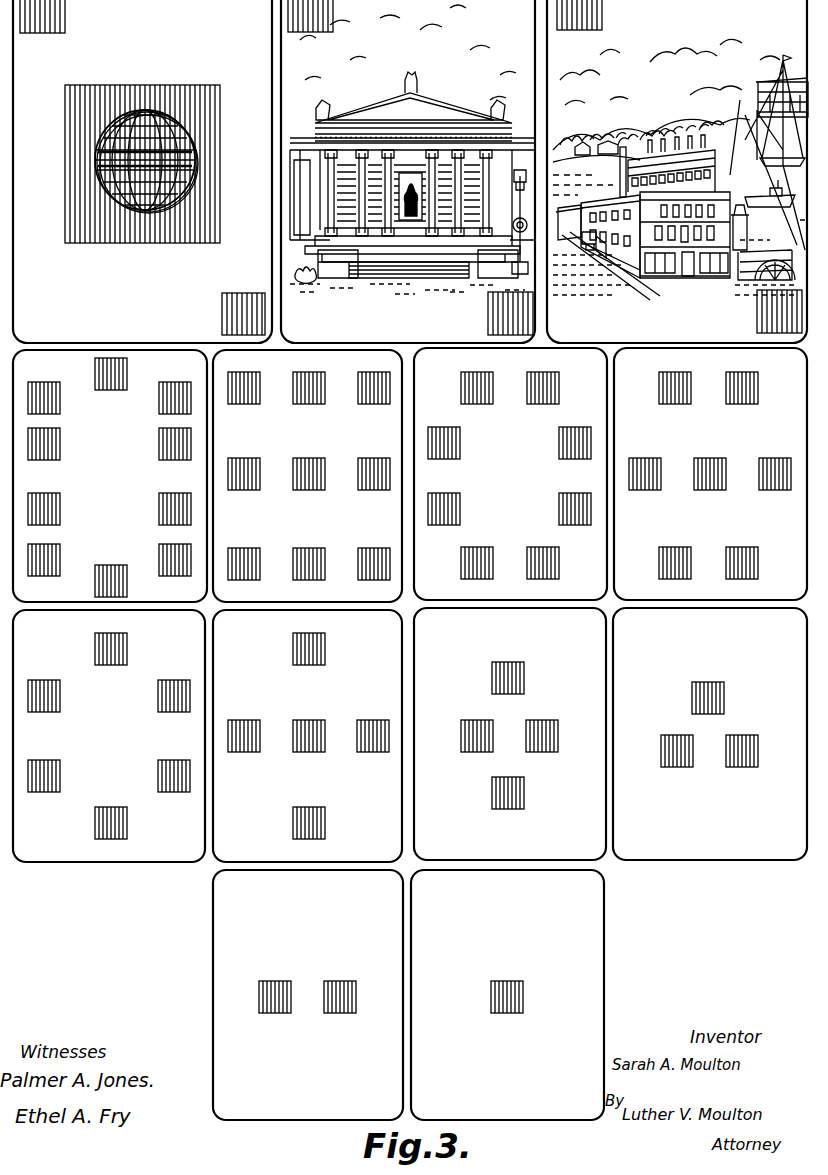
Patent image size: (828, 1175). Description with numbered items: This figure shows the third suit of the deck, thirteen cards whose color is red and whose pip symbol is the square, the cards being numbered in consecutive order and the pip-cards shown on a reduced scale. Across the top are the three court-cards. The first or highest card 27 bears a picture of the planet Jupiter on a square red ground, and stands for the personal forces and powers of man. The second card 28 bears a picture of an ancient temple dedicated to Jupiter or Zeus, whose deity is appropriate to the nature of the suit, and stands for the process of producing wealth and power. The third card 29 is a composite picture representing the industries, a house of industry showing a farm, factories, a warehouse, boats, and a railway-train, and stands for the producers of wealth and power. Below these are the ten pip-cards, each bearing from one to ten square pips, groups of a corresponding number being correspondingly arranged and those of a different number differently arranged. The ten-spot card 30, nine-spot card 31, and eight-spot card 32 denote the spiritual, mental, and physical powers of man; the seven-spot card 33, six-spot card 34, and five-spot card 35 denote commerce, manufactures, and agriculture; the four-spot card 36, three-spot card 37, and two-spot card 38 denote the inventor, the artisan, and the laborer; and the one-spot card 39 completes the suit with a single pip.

The card showing planet Jupiter 27 is at (142, 171).
The card showing temple of Jupiter 28 is at (408, 171).
The card showing house of industry 29 is at (677, 171).
The ten-spot pip-card 30 is at (110, 476).
The nine-spot pip-card 31 is at (307, 476).
The eight-spot pip-card 32 is at (510, 474).
The seven-spot pip-card 33 is at (710, 474).
The six-spot pip-card 34 is at (109, 736).
The five-spot pip-card 35 is at (307, 736).
The four-spot pip-card 36 is at (510, 734).
The three-spot pip-card 37 is at (710, 734).
The two-spot pip-card 38 is at (308, 995).
The one-spot pip-card 39 is at (507, 995).